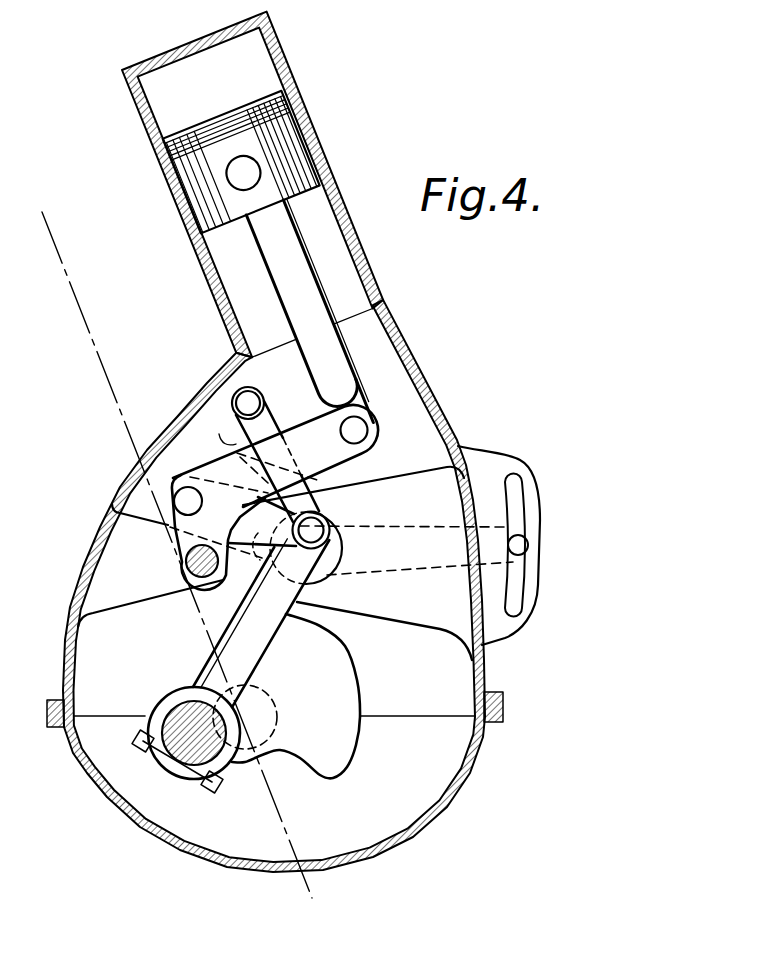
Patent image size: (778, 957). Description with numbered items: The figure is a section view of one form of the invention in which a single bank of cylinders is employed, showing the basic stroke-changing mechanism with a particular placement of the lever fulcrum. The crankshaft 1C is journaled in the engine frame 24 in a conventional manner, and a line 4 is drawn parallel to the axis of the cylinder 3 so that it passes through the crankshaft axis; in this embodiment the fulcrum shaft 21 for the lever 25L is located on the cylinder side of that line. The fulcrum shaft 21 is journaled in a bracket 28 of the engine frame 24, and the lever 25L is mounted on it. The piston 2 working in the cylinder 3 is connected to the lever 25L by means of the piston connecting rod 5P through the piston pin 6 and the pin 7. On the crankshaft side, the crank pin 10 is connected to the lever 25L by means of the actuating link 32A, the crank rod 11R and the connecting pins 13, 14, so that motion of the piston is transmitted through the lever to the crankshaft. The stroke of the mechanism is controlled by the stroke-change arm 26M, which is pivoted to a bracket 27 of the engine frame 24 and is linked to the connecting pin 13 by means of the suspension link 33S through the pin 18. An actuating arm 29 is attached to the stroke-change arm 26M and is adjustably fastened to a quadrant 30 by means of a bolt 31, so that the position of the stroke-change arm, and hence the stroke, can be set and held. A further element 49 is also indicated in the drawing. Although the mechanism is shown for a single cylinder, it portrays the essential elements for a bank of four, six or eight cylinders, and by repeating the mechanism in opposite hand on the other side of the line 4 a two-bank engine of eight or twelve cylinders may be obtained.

The crankshaft 1C is at (252, 760).
The piston 2 is at (304, 140).
The cylinder 3 is at (284, 53).
The line 4- 4 is at (174, 556).
The piston connecting rod 5P is at (351, 358).
The piston pin 6 is at (226, 176).
The pin 7 is at (369, 426).
The crank pin 10 is at (178, 756).
The crank rod 11R is at (220, 637).
The connecting pin 13 is at (326, 513).
The connecting pin 14 is at (174, 500).
The pin 18 is at (254, 398).
The fulcrum shaft 21 is at (184, 561).
The engine frame 24 is at (449, 390).
The lever 25L is at (356, 458).
The stroke-change arm 26M is at (255, 461).
The bracket 27 is at (418, 615).
The bracket 28 is at (120, 604).
The actuating arm 29 is at (391, 533).
The quadrant 30 is at (523, 502).
The bolt 31 is at (528, 543).
The actuating link 32A is at (247, 555).
The suspension link 33S is at (300, 500).
The bearing 49 is at (332, 582).